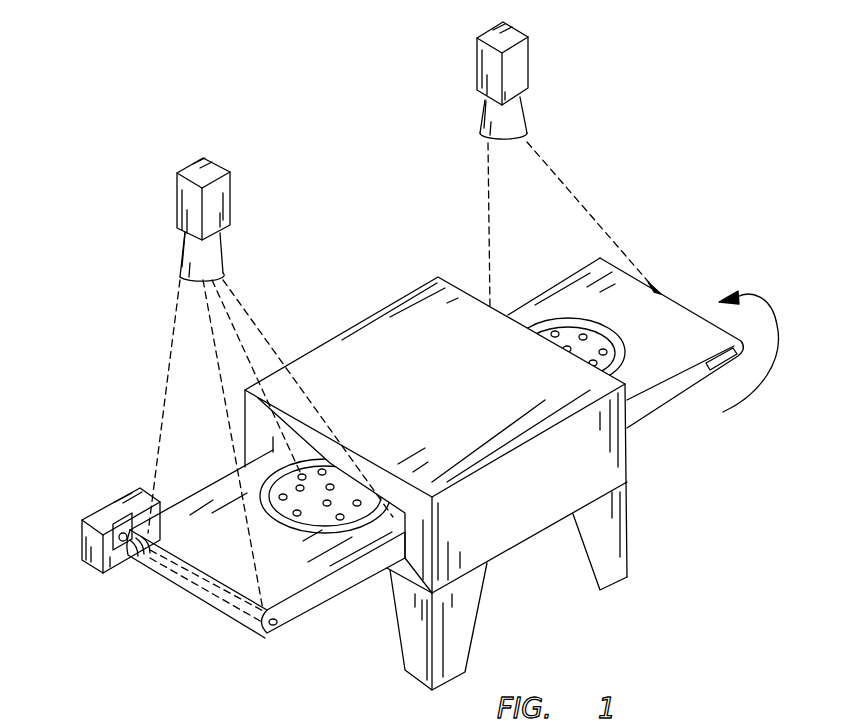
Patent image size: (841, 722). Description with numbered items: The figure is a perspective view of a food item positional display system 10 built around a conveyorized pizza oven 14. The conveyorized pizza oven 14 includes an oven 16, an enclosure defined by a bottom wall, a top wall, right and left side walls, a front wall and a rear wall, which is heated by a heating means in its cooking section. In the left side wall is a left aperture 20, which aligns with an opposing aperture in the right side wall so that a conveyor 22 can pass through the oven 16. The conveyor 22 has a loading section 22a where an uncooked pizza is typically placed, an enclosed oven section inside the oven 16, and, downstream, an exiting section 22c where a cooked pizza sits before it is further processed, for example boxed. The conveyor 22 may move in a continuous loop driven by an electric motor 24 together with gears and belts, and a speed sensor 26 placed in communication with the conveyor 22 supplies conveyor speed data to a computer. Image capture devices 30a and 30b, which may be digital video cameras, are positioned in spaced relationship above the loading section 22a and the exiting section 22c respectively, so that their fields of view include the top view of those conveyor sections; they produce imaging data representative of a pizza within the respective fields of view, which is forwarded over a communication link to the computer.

The food item positional display system 10 is at (78, 200).
The conveyorized pizza oven 14 is at (382, 300).
The oven 16 is at (540, 506).
The left aperture 20 is at (273, 446).
The conveyor 22 is at (683, 296).
The loading section 22a is at (679, 348).
The exiting section 22c is at (208, 552).
The electric motor 24 is at (112, 517).
The speed sensor 26 is at (704, 368).
The image capture device 30a is at (517, 65).
The image capture device 30b is at (213, 193).